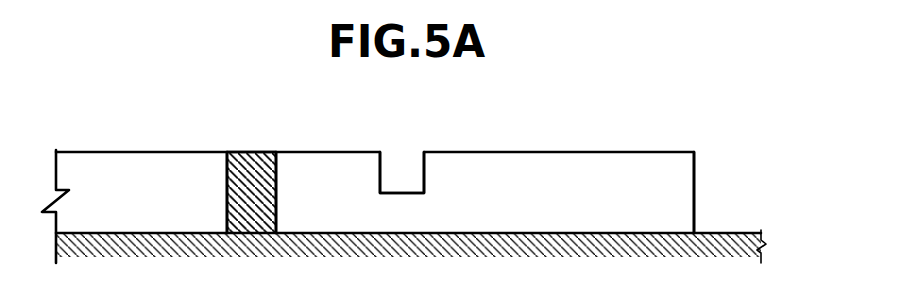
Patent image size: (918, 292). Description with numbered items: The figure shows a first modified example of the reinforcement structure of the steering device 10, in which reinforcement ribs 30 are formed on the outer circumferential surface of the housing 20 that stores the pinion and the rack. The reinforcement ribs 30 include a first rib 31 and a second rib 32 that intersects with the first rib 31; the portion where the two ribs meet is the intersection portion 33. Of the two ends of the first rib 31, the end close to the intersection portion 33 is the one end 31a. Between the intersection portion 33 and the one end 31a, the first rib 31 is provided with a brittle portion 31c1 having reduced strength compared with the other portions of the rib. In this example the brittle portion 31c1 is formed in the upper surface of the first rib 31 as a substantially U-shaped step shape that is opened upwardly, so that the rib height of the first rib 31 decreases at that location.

The steering device 10 is at (572, 90).
The housing 20 is at (732, 231).
The reinforcement ribs 30 is at (85, 80).
The first rib 31 is at (95, 150).
The one end 31a is at (696, 177).
The brittle portion 31c1 is at (422, 173).
The second rib 32 is at (226, 185).
The intersection portion 33 is at (250, 149).